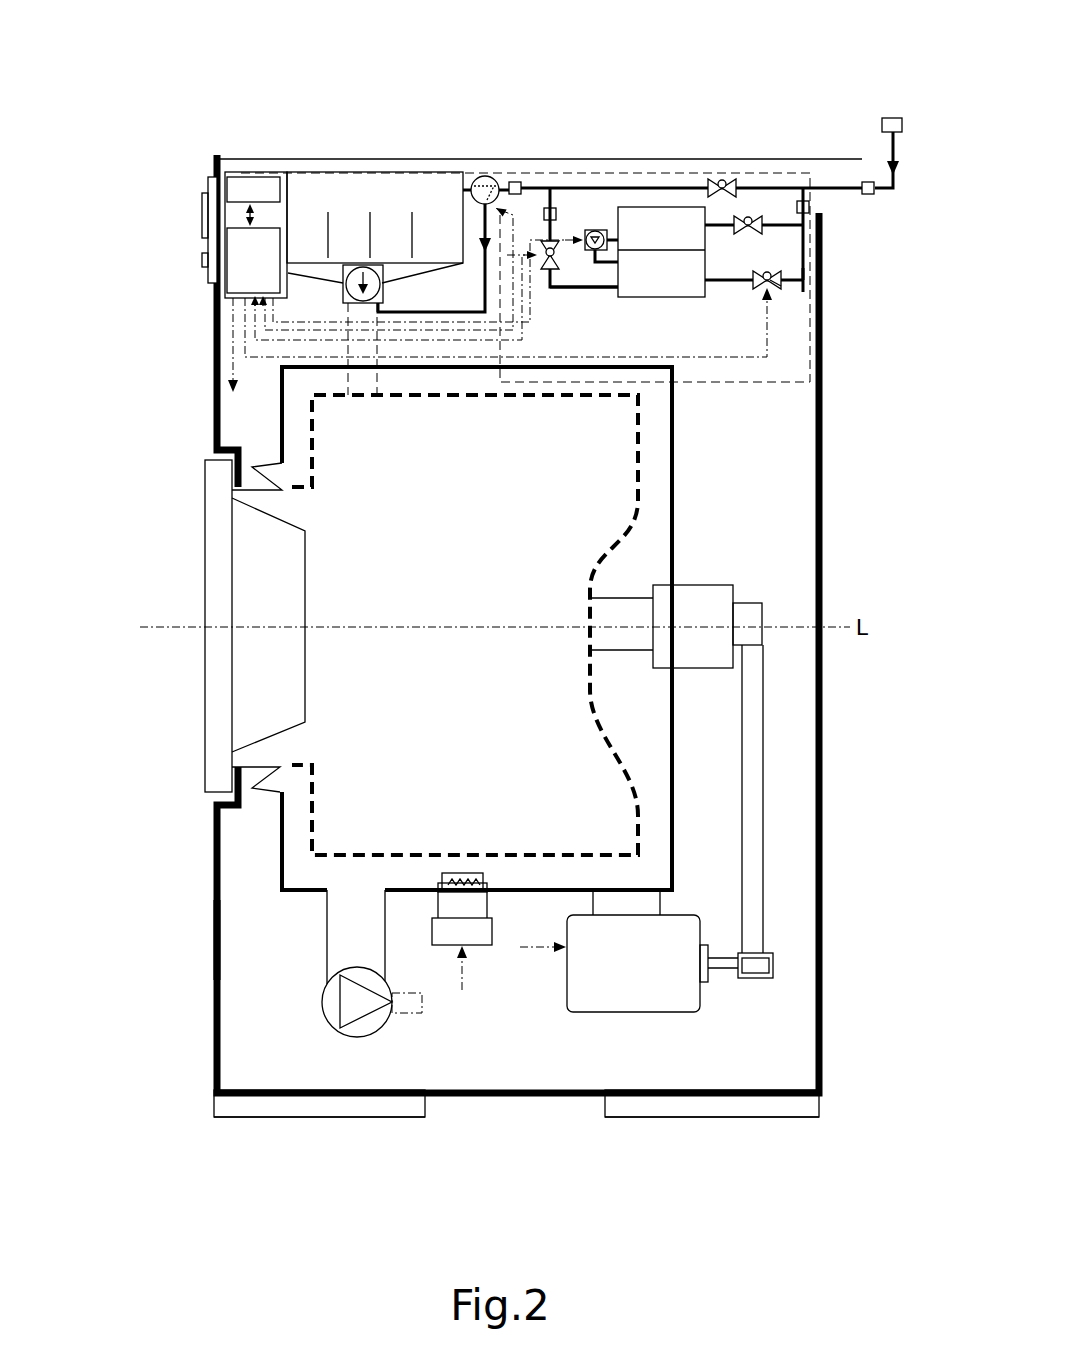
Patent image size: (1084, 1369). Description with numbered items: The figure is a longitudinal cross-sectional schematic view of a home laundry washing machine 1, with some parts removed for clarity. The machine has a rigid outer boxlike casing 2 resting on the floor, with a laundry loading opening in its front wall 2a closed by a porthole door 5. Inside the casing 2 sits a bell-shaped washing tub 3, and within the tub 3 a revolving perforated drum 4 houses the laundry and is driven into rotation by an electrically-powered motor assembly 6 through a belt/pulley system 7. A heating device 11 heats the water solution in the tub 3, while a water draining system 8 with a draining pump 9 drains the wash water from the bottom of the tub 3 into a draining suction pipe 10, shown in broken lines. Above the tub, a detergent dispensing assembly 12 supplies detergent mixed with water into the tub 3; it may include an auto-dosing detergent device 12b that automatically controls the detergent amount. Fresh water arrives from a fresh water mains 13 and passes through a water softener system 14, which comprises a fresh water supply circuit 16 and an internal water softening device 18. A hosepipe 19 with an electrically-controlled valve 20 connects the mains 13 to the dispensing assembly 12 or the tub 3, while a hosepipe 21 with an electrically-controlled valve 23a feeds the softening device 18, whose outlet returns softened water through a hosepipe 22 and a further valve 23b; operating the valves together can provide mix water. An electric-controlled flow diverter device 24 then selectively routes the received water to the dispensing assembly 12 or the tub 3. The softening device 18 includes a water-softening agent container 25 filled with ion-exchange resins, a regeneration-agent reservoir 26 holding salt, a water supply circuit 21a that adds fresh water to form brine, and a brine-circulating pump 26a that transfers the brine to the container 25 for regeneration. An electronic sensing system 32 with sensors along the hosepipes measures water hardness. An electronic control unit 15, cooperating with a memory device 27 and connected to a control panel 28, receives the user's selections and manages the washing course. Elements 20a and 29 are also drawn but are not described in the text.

The home laundry washing machine 1 is at (262, 1132).
The outer boxlike casing 2 is at (213, 1005).
The front wall 2a is at (211, 940).
The washing tub 3 is at (278, 848).
The revolving perforated drum 4 is at (307, 810).
The porthole door 5 is at (205, 722).
The electrically-powered motor assembly 6 is at (603, 997).
The belt/pulley system 7 is at (755, 860).
The water draining system 8 is at (358, 1057).
The draining pump 9 is at (378, 1032).
The draining suction pipe 10 is at (420, 1005).
The heating device 11 is at (484, 956).
The detergent dispensing assembly 12 is at (335, 186).
The auto-dosing detergent device 12b is at (373, 260).
The fresh water mains 13 is at (893, 118).
The water softener system 14 is at (785, 382).
The electronic control unit 15 is at (247, 270).
The fresh water supply circuit 16 is at (849, 213).
The internal water softening device 18 is at (622, 201).
The hosepipe 19 is at (780, 187).
The electrically-controlled valve 20 is at (722, 175).
The valve 20a is at (748, 210).
The hosepipe 21 is at (806, 268).
The water supply circuit 21a is at (738, 280).
The hosepipe 22 is at (588, 292).
The electrically-controlled valve 23a is at (783, 287).
The electrically-controlled valve 23b is at (550, 160).
The flow diverter device 24 is at (482, 158).
The water-softening agent container 25 is at (662, 281).
The regeneration-agent reservoir 26 is at (661, 236).
The brine-circulating pump 26a is at (593, 228).
The memory device 27 is at (257, 192).
The control panel 28 is at (196, 180).
The control buttons 29 is at (185, 218).
The electronic sensing system 32 is at (548, 206).